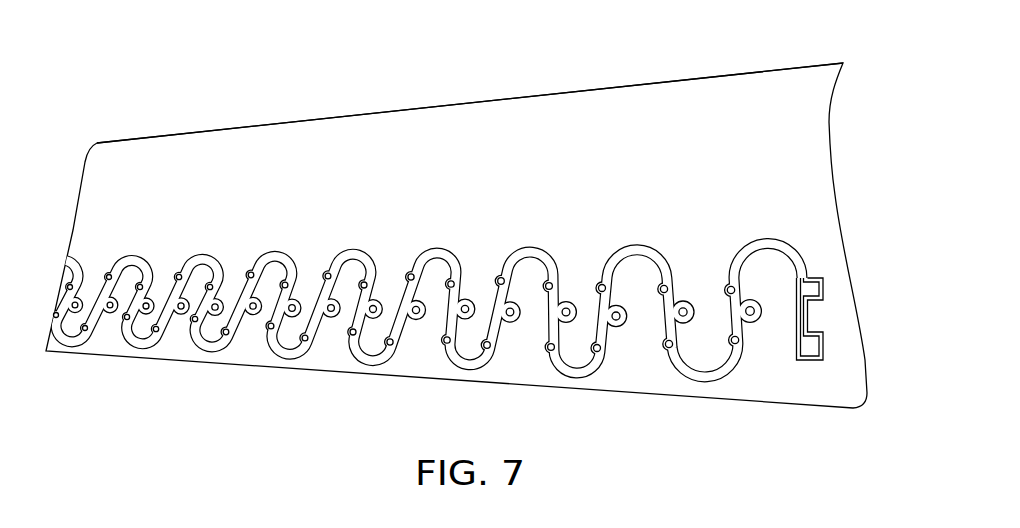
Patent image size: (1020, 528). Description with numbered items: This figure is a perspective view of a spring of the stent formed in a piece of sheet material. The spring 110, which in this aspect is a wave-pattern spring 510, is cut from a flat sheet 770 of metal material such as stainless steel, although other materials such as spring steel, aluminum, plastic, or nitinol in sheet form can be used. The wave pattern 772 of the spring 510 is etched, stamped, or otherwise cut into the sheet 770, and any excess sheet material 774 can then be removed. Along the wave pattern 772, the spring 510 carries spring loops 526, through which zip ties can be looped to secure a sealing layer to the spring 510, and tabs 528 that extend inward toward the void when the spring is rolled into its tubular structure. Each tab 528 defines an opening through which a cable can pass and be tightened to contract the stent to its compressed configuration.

The spring 110 is at (532, 247).
The wave-pattern spring 510 is at (361, 253).
The spring loops 526 is at (485, 339).
The tabs 528 is at (745, 303).
The sheet 770 is at (817, 212).
The wave pattern 772 is at (207, 255).
The excess sheet material 774 is at (711, 97).